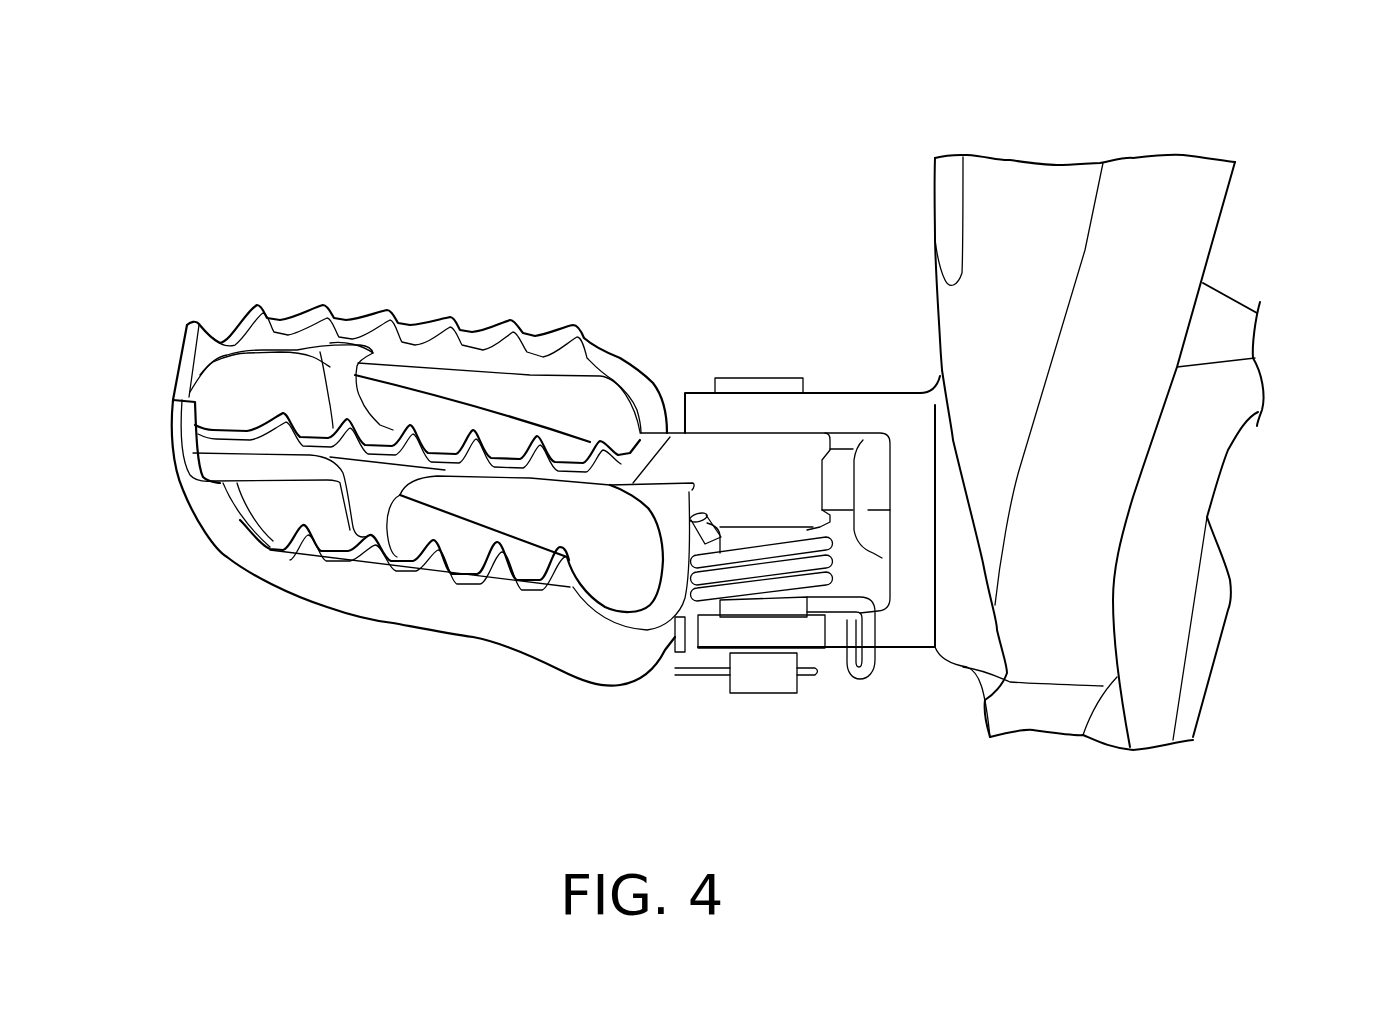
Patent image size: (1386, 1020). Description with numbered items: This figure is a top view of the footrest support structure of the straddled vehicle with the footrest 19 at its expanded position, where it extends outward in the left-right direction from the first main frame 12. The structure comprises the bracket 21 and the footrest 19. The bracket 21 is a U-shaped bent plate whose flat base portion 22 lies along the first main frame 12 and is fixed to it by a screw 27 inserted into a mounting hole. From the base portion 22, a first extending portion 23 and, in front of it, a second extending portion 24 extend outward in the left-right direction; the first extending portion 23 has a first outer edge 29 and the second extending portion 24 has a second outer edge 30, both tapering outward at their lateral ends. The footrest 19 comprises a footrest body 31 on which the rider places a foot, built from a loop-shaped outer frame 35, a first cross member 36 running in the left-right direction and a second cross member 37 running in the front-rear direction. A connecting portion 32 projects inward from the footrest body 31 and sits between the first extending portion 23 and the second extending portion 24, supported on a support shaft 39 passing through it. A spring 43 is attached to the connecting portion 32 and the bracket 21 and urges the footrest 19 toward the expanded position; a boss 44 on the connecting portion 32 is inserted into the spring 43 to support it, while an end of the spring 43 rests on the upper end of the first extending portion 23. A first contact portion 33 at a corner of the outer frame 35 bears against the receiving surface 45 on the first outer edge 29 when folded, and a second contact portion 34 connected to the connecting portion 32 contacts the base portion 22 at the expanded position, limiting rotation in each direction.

The first main frame 12 is at (947, 222).
The footrest 19 is at (428, 202).
The bracket 21 is at (882, 688).
The base portion 22 is at (913, 573).
The first extending portion 23 is at (788, 690).
The second extending portion 24 is at (753, 390).
The screw 27 is at (877, 480).
The first outer edge 29 is at (715, 634).
The second outer edge 30 is at (793, 408).
The footrest body 31 is at (357, 640).
The connecting portion 32 is at (722, 467).
The first contact portion 33 is at (655, 667).
The second contact portion 34 is at (847, 458).
The outer frame 35 is at (457, 610).
The first cross member 36 is at (440, 450).
The second cross member 37 is at (340, 380).
The support shaft 39 is at (767, 680).
The spring 43 is at (820, 563).
The boss 44 is at (743, 607).
The receiving surface 45 is at (803, 637).